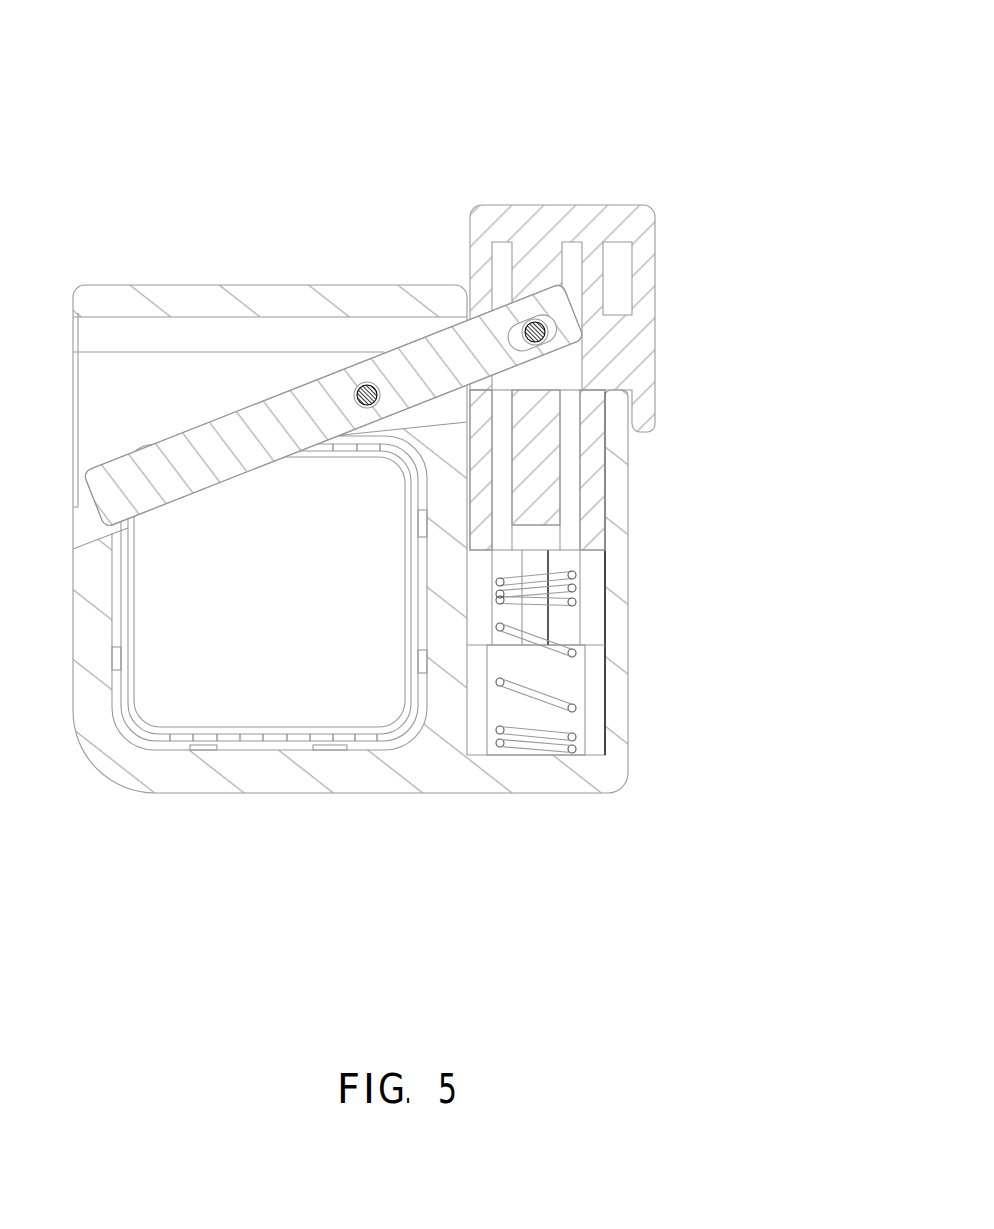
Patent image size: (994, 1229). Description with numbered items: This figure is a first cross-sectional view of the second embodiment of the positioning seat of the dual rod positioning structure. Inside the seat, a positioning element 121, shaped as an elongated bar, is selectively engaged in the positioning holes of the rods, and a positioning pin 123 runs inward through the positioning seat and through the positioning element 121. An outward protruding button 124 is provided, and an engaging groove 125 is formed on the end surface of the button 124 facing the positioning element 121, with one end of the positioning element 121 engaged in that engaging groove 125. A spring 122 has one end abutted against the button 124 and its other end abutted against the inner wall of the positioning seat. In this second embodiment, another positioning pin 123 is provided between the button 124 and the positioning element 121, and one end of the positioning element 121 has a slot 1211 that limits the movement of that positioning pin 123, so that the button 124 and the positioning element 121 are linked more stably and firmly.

The positioning element 121 is at (209, 450).
The slot 1211 is at (517, 337).
The spring 122 is at (577, 604).
The positioning pin 123 is at (370, 393).
The button 124 is at (630, 217).
The engaging groove 125 is at (553, 377).